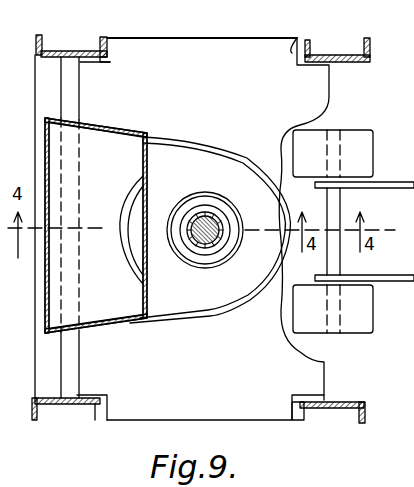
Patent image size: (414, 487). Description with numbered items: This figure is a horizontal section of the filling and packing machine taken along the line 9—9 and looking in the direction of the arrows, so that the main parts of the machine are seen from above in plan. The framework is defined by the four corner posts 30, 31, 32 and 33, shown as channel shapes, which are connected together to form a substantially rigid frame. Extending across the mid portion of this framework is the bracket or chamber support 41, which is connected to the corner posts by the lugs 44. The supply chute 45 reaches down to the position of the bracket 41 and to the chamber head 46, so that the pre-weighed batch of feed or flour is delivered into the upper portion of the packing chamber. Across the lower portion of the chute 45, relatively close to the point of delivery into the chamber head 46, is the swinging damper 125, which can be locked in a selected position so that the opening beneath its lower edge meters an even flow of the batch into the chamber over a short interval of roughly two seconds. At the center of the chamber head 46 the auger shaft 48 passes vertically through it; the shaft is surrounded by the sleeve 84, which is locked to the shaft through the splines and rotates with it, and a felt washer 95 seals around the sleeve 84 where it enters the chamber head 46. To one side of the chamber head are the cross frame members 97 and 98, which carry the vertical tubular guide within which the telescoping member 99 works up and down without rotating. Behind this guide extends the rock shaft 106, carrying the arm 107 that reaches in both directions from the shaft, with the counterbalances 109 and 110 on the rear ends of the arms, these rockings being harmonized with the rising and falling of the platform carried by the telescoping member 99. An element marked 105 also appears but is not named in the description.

The corner post 30 is at (340, 409).
The corner post 31 is at (343, 55).
The corner post 32 is at (82, 50).
The corner post 33 is at (66, 404).
The bracket or chamber support 41 is at (240, 65).
The lugs 44 is at (112, 50).
The supply chute 45 is at (108, 333).
The chamber head 46 is at (225, 328).
The auger shaft 48 is at (203, 218).
The sleeve 84 is at (200, 243).
The felt washer 95 is at (218, 246).
The cross frame member 97 is at (48, 356).
The cross frame member 98 is at (404, 367).
The telescoping member 99 is at (413, 215).
The section line 9 is at (403, 233).
The upper plate 105 is at (405, 182).
The rock shaft 106 is at (364, 267).
The arm 107 is at (407, 282).
The counterbalance 109 is at (350, 326).
The counterbalance 110 is at (362, 137).
The swinging damper 125 is at (92, 160).